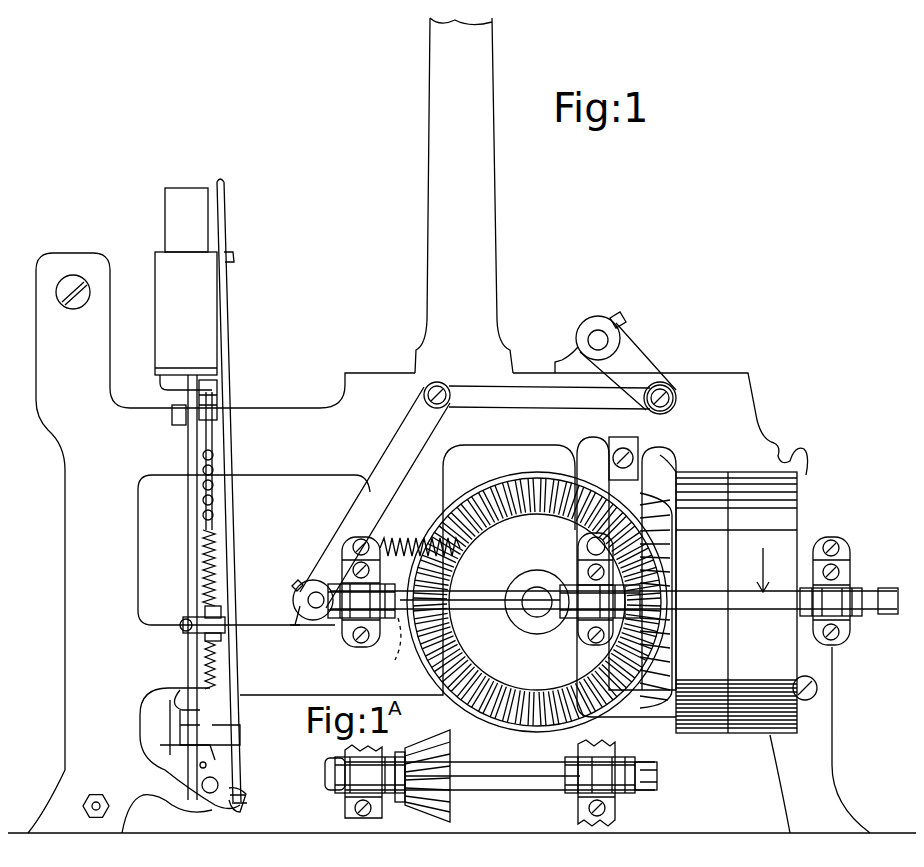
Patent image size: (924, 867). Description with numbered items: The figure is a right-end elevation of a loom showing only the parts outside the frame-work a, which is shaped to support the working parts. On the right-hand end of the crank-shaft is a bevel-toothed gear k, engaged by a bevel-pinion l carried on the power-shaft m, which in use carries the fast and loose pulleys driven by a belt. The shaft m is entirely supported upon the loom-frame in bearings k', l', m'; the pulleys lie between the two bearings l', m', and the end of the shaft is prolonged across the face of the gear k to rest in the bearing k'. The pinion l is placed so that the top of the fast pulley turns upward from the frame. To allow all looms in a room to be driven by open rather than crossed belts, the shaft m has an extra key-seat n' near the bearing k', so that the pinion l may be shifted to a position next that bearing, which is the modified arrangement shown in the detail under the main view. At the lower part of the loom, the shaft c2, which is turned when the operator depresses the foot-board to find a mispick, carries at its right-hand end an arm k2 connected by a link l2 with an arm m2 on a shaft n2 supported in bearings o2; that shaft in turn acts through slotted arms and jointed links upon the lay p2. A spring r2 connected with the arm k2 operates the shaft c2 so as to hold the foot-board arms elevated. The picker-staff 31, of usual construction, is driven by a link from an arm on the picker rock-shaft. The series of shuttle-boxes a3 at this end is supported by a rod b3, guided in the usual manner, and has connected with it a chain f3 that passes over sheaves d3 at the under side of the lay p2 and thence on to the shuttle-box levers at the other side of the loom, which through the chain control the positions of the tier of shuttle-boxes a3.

In FIG. 1, the frame-work a is at (462, 425).
In FIG. 1, the series of shuttle-boxes a3 is at (186, 220).
In FIG. 1, the lay p2 is at (157, 358).
In FIG. 1, the sheaves d3 is at (178, 424).
In FIG. 1, the rod b3 is at (188, 500).
In FIG. 1, the chain f3 is at (218, 499).
In FIG. 1, the picker-staff 31 is at (240, 514).
In FIG. 1, the shaft c2 is at (237, 694).
In FIG. 1, the arm k2 is at (380, 534).
In FIG. 1, the link l2 is at (550, 398).
In FIG. 1, the arm m2 is at (626, 361).
In FIG. 1, the shaft n2 is at (598, 340).
In FIG. 1, the bearings o2 is at (574, 356).
In FIG. 1, the bearing k' is at (356, 592).
In FIG. 1A, the bearing k' is at (363, 785).
In FIG. 1, the spring r2 is at (420, 531).
In FIG. 1, the power-shaft m is at (614, 589).
In FIG. 1A, the power-shaft m is at (491, 784).
In FIG. 1, the extra key-seat n' is at (393, 646).
In FIG. 1, the bevel-toothed gear k is at (537, 602).
In FIG. 1, the bevel-pinion l is at (618, 577).
In FIG. 1A, the bevel-pinion l is at (427, 776).
In FIG. 1, the bearing l' is at (586, 589).
In FIG. 1A, the bearing l' is at (604, 778).
In FIG. 1, the bearing m' is at (780, 602).